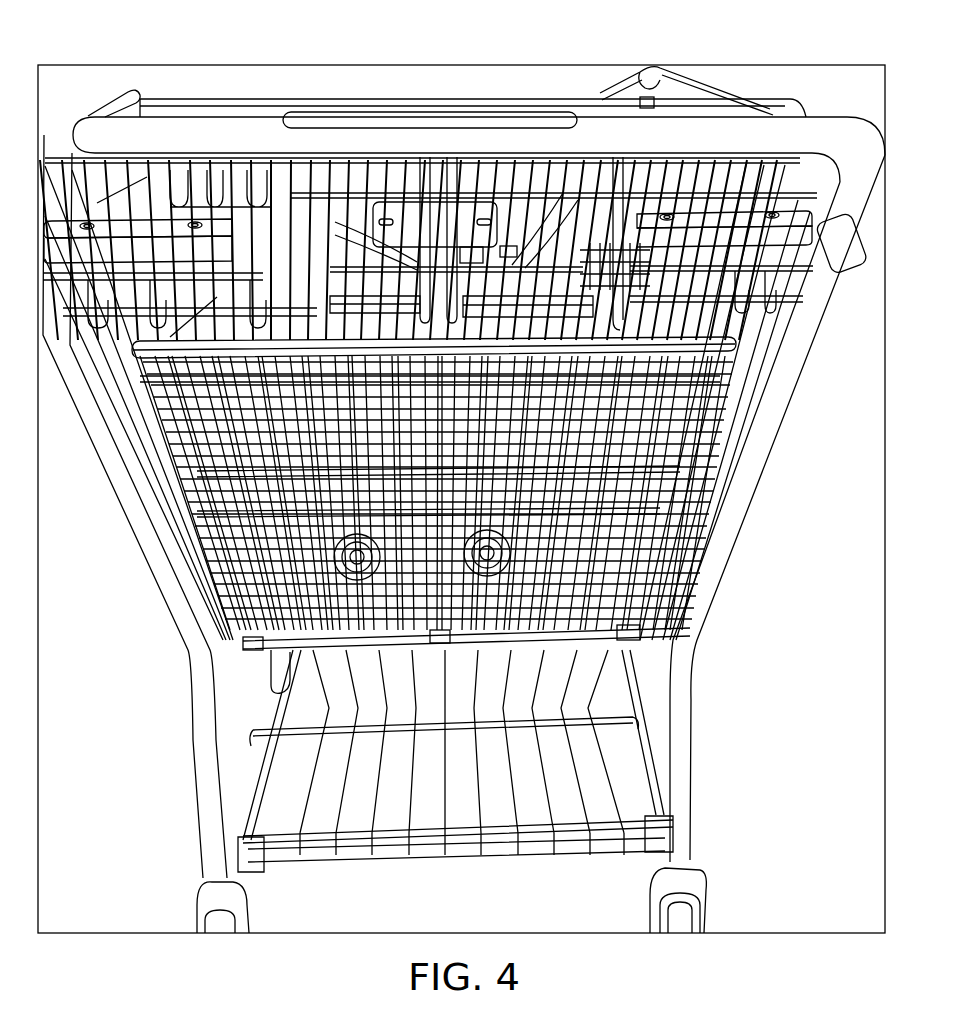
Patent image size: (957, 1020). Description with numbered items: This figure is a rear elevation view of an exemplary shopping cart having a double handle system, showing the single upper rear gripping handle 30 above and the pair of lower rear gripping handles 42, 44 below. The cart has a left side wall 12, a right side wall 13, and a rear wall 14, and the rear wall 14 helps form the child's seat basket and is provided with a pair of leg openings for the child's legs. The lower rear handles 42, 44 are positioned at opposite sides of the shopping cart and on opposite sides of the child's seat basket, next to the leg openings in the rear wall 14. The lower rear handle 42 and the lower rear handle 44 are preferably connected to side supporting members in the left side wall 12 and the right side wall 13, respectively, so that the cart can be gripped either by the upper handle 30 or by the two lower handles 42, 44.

The left side wall 12 is at (108, 510).
The right side wall 13 is at (792, 511).
The rear wall 14 is at (212, 563).
The single upper rear gripping handle 30 is at (446, 108).
The lower rear handle 42 is at (130, 229).
The lower rear handle 44 is at (716, 229).